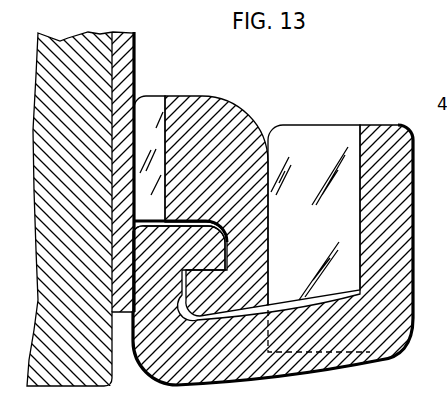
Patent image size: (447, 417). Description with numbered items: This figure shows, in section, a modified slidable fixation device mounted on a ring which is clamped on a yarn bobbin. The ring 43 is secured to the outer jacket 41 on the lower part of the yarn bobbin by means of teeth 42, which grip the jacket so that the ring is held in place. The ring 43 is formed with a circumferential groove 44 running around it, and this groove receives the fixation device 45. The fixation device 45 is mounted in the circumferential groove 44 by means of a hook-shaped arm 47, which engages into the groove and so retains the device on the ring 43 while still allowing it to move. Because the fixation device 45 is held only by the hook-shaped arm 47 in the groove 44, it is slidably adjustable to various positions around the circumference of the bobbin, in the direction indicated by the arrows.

The outer jacket 41 is at (137, 41).
The teeth 42 is at (150, 105).
The ring 43 is at (202, 110).
The circumferential groove 44 is at (281, 112).
The fixation device 45 is at (412, 345).
The hook-shaped arm 47 is at (200, 246).